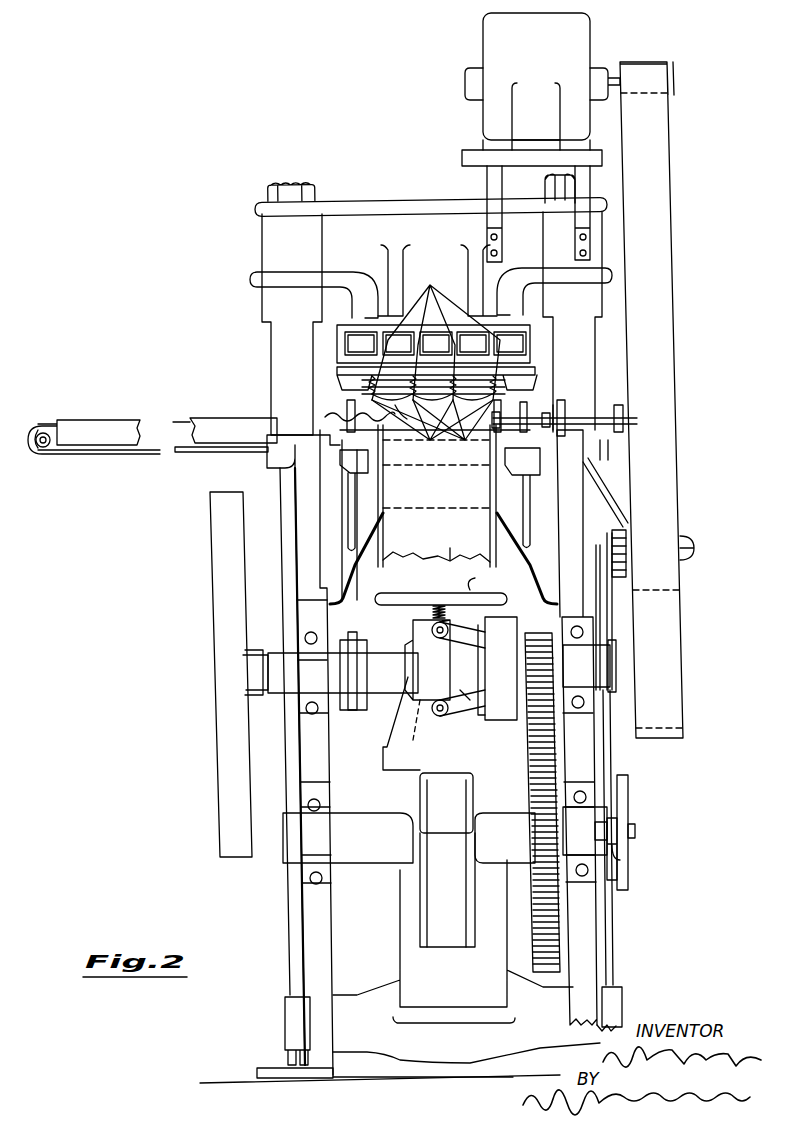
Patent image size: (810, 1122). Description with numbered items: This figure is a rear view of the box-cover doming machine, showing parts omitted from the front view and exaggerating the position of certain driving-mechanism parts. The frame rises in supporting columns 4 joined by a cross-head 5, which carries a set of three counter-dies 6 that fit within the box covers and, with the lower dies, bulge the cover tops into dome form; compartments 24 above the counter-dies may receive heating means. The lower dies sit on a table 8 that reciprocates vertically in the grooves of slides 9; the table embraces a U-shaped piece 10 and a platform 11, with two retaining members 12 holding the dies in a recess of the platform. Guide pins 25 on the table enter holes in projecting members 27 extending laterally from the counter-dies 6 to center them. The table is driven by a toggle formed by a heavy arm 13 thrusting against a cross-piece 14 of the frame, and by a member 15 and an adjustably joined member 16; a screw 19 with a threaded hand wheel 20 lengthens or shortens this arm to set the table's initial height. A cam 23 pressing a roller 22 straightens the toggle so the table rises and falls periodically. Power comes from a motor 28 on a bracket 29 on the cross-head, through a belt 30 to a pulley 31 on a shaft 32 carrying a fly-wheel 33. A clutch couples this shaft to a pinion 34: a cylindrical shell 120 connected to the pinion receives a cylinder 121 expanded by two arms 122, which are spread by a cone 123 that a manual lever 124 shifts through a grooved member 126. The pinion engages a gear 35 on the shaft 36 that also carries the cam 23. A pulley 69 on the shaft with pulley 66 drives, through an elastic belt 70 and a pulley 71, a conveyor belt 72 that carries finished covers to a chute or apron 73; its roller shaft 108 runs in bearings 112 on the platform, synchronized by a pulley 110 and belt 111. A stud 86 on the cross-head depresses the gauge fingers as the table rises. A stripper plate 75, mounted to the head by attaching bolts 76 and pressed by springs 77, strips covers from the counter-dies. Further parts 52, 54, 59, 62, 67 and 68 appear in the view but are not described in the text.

The supporting columns 4 is at (272, 367).
The cross-head 5 is at (368, 200).
The counter-dies 6 is at (432, 433).
The table 8 is at (385, 462).
The slides 9 is at (298, 508).
The U-shaped piece 10 is at (515, 560).
The platform 11 is at (325, 432).
The retaining members 12 is at (520, 497).
The heavy arm 13 is at (400, 952).
The cross-piece 14 is at (622, 993).
The member 15 is at (403, 724).
The additional member 16 is at (473, 580).
The screw 19 is at (433, 612).
The threaded hand wheel 20 is at (402, 593).
The roller 22 is at (420, 796).
The cam 23 is at (420, 900).
The compartments 24 is at (433, 344).
The guide pins 25 is at (348, 420).
The projecting members 27 is at (337, 386).
The motor 28 is at (483, 45).
The bracket 29 is at (468, 160).
The belt 30 is at (680, 393).
The pulley 31 is at (686, 690).
The shaft 32 is at (460, 672).
The fly-wheel 33 is at (220, 700).
The pinion 34 is at (538, 633).
The gear 35 is at (560, 922).
The shaft 36 is at (635, 833).
The disk 52 is at (628, 793).
The bracket 54 is at (625, 858).
The conveyor 59 is at (150, 418).
The knob 62 is at (700, 548).
The pulley 66 is at (618, 573).
The rod 67 is at (612, 618).
The block 68 is at (618, 665).
The pulley 69 is at (626, 540).
The belt 70 is at (616, 498).
The pulley 71 is at (626, 421).
The conveyor belt 72 is at (406, 407).
The chute or apron 73 is at (441, 568).
The plate 75 is at (505, 385).
The attaching bolts 76 is at (447, 435).
The springs 77 is at (436, 332).
The stud 86 is at (338, 414).
The shaft 108 is at (521, 497).
The pulley 110 is at (582, 412).
The belt 111 is at (572, 404).
The bearings 112 is at (497, 455).
The cylindrical shell 120 is at (512, 722).
The cylinder 121 is at (480, 720).
The arms 122 is at (460, 635).
The cone 123 is at (425, 705).
The lever 124 is at (340, 695).
The grooved member 126 is at (347, 710).